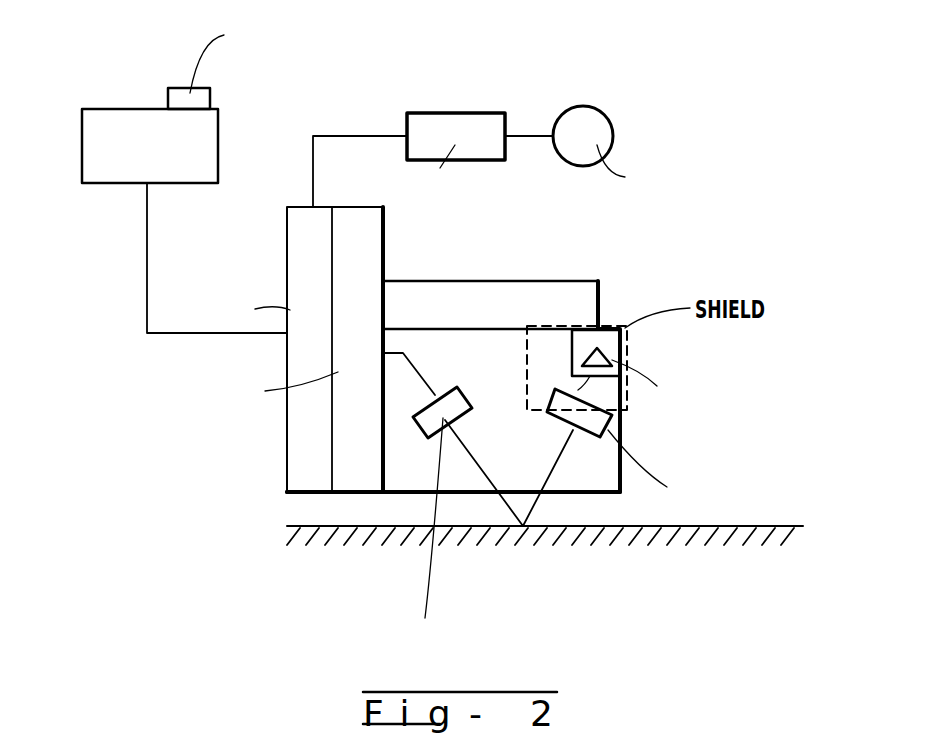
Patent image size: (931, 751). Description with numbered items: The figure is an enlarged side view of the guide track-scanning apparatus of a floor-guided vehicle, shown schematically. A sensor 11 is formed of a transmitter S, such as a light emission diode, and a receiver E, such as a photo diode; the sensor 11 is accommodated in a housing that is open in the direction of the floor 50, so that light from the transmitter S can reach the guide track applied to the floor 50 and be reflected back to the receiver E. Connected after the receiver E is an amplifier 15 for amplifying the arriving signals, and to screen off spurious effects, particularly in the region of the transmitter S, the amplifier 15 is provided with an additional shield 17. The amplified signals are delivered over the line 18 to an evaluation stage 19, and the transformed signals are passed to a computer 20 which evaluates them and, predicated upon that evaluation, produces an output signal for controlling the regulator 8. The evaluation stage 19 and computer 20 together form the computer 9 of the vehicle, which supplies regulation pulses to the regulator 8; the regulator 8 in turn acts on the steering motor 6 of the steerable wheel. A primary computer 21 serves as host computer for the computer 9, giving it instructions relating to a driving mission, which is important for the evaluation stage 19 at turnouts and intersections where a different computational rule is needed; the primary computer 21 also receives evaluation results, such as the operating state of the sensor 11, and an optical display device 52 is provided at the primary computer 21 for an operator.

The primary computer 21 is at (115, 109).
The optical display device 52 is at (210, 98).
The regulator 8 is at (462, 113).
The steering motor 6 is at (588, 107).
The computer 20 is at (292, 280).
The evaluation stage 19 is at (372, 272).
The line 18 is at (513, 281).
The shield 17 is at (484, 430).
The amplifier 15 is at (610, 350).
The receiver E is at (630, 442).
The transmitter S is at (428, 458).
The computer 9 is at (250, 461).
The sensor 11 is at (385, 505).
The floor 50 is at (566, 550).